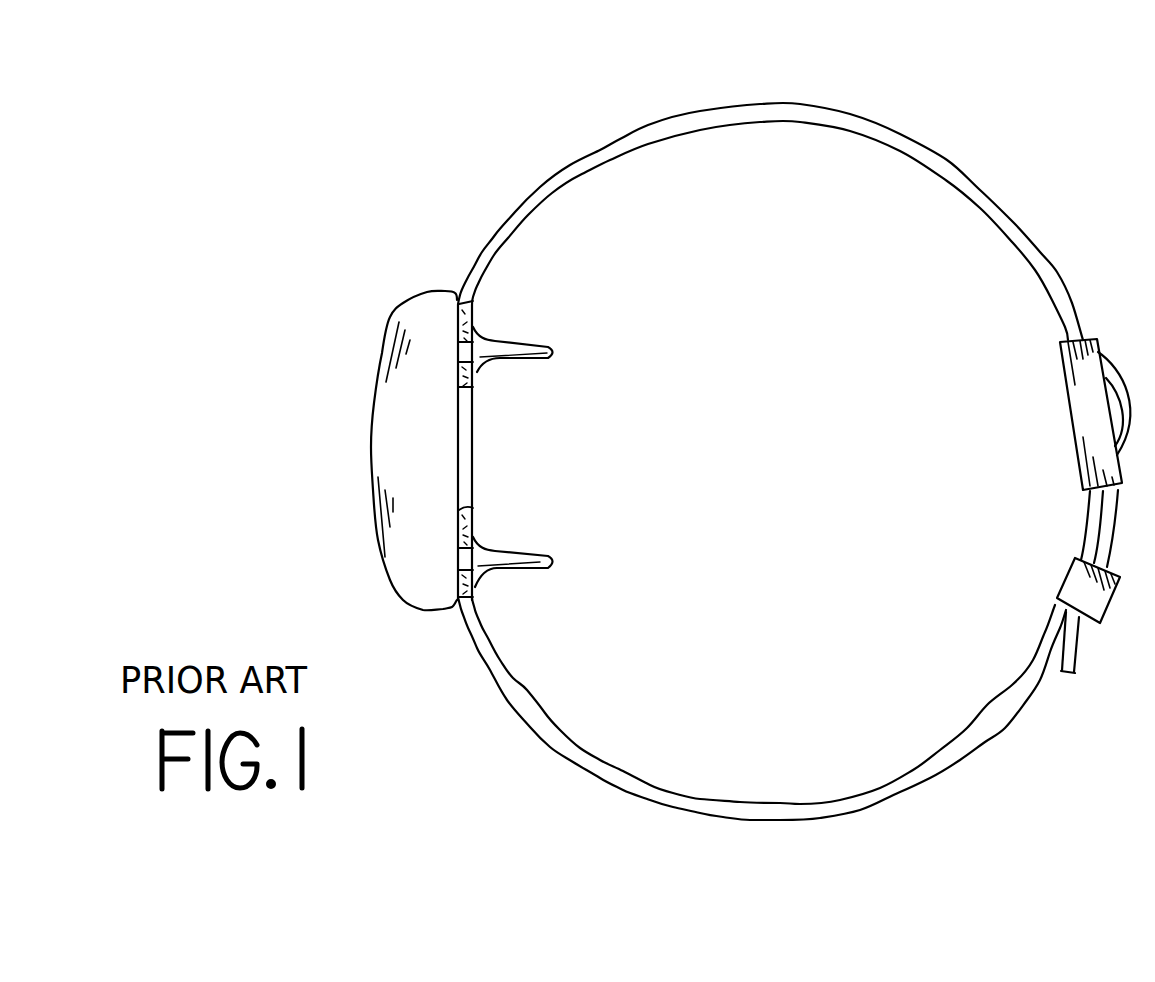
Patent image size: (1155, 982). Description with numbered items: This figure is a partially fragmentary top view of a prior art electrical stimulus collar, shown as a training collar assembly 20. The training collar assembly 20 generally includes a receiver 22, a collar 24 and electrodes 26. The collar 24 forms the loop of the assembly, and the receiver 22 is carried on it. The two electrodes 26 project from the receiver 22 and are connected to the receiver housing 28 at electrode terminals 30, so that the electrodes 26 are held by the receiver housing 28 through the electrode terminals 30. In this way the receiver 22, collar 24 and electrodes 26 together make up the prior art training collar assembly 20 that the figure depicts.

The training collar assembly 20 is at (1062, 136).
The receiver 22 is at (358, 225).
The collar 24 is at (648, 130).
The electrodes 26 is at (520, 358).
The receiver housing 28 is at (398, 438).
The electrode terminals 30 is at (460, 352).